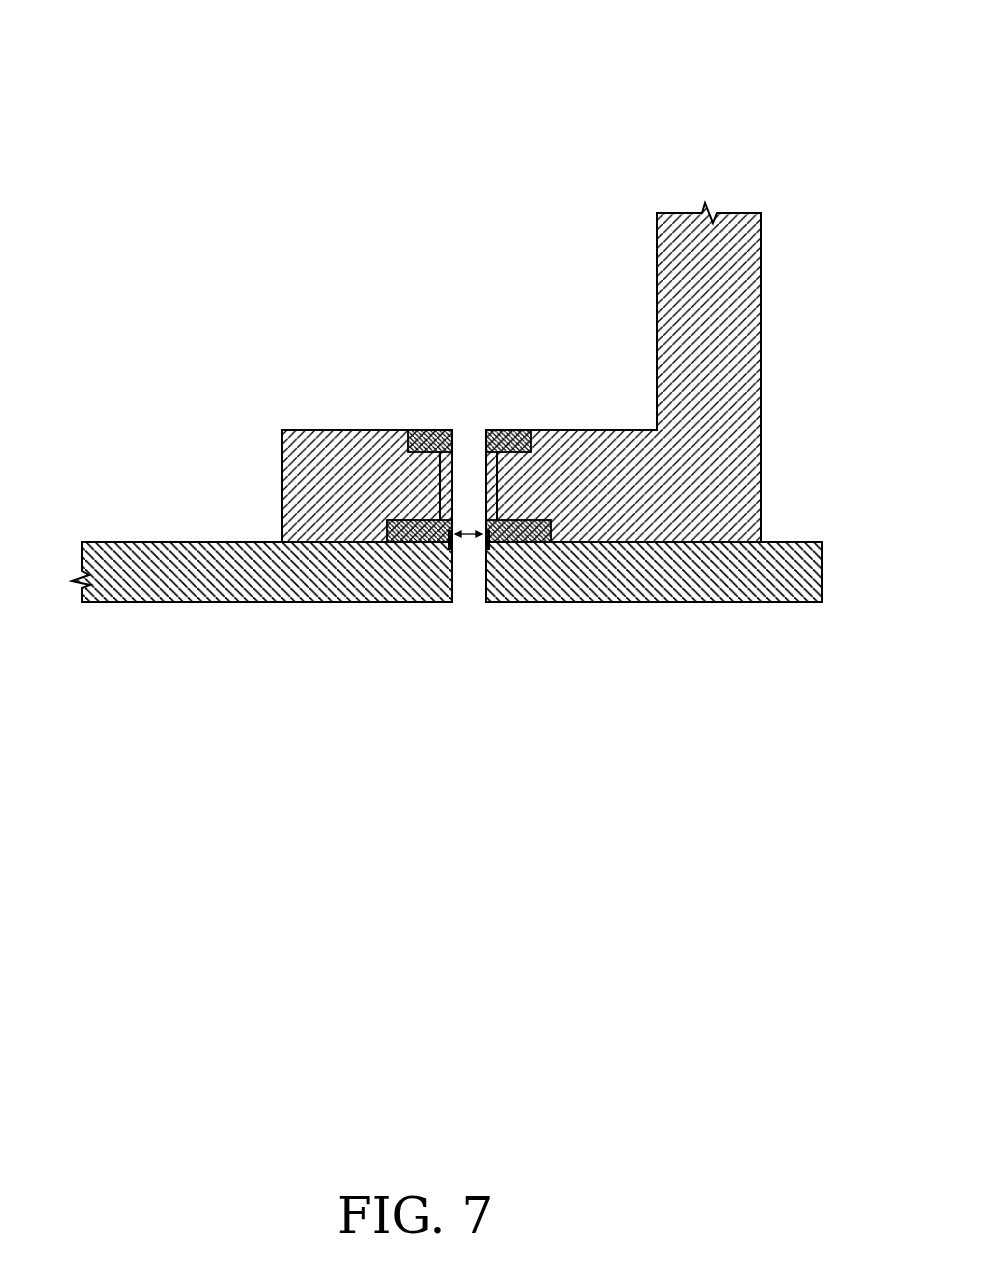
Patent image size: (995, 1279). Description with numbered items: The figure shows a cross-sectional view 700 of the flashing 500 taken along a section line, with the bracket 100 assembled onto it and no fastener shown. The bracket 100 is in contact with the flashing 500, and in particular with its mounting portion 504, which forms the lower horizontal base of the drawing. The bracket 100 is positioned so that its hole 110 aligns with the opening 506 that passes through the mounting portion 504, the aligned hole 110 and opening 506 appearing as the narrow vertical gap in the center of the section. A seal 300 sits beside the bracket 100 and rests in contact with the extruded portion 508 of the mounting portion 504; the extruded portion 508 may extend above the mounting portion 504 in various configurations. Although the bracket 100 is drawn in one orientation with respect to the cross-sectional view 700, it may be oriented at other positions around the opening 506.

The cross-sectional view 700 is at (672, 51).
The bracket 100 is at (657, 318).
The seal 300 is at (443, 430).
The hole 110 is at (469, 408).
The flashing 500 is at (665, 670).
The mounting portion 504 is at (202, 540).
The opening 506 is at (442, 590).
The extruded portion 508 is at (469, 534).